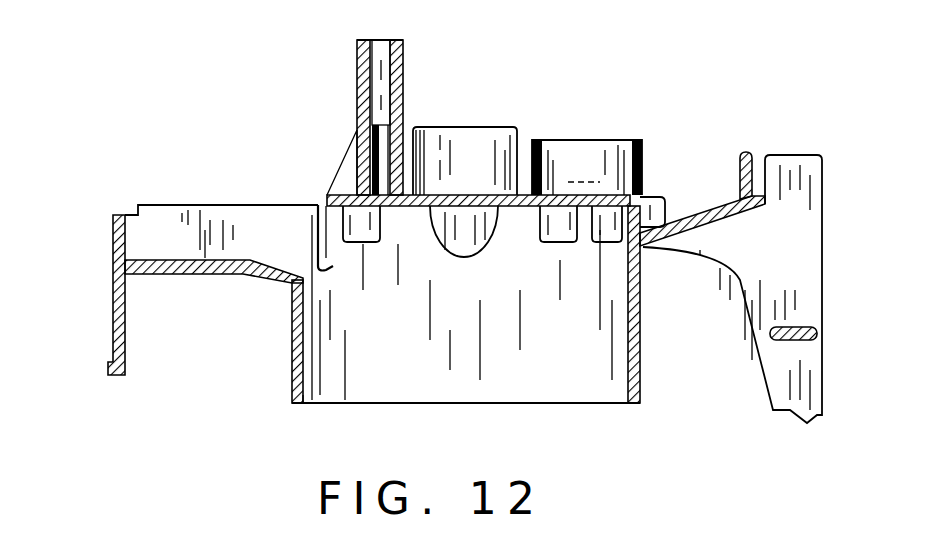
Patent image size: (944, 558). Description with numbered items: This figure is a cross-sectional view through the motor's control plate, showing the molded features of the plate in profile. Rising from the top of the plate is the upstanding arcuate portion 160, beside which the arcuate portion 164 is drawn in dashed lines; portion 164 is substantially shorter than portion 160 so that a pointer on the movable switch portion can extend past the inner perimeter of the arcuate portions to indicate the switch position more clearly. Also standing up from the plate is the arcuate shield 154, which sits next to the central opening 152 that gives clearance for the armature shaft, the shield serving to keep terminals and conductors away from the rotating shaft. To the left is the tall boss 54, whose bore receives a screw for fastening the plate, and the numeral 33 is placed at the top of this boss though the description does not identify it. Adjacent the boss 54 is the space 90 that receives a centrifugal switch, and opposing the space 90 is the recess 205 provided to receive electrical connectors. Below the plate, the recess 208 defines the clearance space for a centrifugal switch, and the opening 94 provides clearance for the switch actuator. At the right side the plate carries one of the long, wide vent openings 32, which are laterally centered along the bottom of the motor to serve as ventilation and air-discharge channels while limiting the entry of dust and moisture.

The vent opening 32 is at (790, 244).
The pin 33 is at (382, 40).
The boss 54 is at (399, 40).
The space 90 is at (254, 230).
The opening 94 is at (328, 254).
The opening 152 is at (462, 214).
The arcuate shield 154 is at (470, 133).
The upstanding arcuate portion 160 is at (550, 140).
The arcuate portion 164 is at (585, 182).
The recess 205 is at (230, 327).
The recess 208 is at (302, 348).